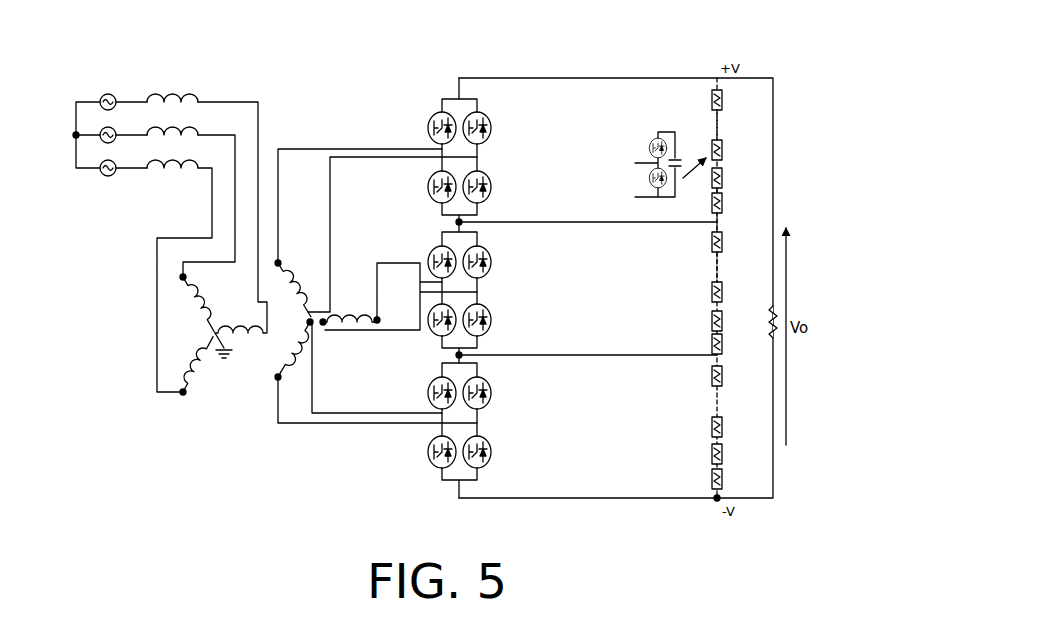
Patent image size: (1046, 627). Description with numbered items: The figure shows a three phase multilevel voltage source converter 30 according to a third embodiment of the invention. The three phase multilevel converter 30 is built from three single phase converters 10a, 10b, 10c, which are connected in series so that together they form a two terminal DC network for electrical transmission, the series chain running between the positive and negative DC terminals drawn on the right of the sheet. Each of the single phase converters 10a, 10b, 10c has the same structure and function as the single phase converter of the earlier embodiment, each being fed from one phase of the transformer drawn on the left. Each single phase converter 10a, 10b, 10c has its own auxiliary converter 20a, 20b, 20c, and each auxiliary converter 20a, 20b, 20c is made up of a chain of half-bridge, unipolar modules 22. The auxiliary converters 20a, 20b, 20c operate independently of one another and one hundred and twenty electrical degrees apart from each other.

The single phase converter 10a is at (511, 77).
The single phase converter 10b is at (505, 219).
The single phase converter 10c is at (508, 355).
The auxiliary converter 20a is at (728, 146).
The auxiliary converter 20b is at (727, 284).
The auxiliary converter 20c is at (727, 428).
The half-bridge unipolar module 22 is at (712, 147).
The three phase multilevel voltage source converter 30 is at (212, 460).